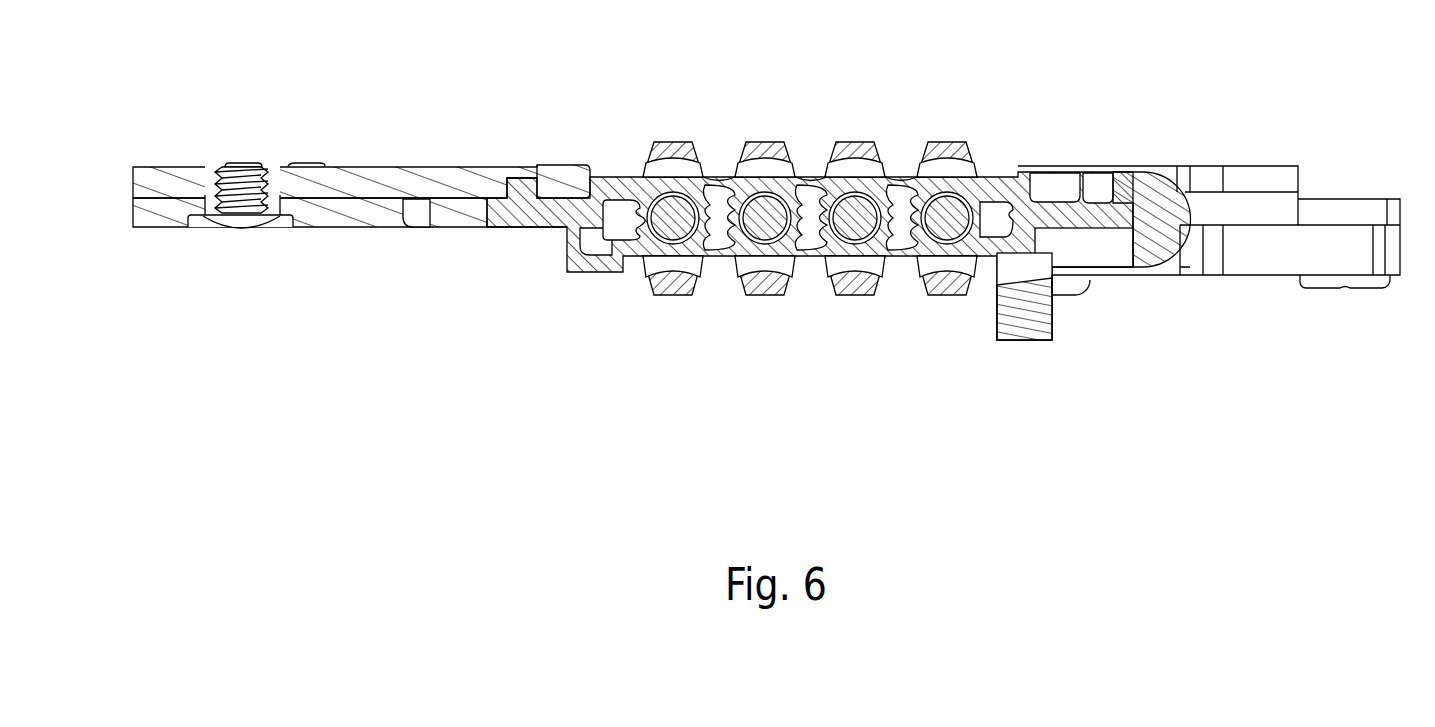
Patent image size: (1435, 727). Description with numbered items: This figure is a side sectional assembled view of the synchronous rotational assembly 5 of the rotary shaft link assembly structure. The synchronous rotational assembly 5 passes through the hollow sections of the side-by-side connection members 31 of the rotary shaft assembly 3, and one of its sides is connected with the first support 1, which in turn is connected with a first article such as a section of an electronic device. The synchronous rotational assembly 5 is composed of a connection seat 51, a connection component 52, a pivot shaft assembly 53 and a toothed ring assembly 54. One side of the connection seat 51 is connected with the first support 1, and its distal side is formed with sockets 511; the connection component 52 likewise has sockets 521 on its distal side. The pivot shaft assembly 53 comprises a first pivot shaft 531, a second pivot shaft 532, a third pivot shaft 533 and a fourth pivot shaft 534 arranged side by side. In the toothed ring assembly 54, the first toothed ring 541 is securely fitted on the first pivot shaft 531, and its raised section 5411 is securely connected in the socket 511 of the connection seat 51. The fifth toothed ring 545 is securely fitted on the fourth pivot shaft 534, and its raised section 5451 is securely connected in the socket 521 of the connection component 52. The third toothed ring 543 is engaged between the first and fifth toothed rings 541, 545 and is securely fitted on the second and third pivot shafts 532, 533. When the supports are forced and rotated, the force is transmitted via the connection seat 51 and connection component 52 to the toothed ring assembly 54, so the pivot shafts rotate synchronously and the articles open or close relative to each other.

The first support 1 is at (170, 228).
The rotary shaft assembly 3 is at (982, 148).
The connection member 31 is at (658, 160).
The synchronous rotational assembly 5 is at (1156, 105).
The connection seat 51 is at (366, 168).
The socket 511 is at (518, 168).
The connection component 52 is at (1187, 222).
The socket 521 is at (1100, 210).
The pivot shaft assembly 53 is at (810, 129).
The first pivot shaft 531 is at (676, 215).
The second pivot shaft 532 is at (768, 215).
The third pivot shaft 533 is at (858, 215).
The fourth pivot shaft 534 is at (947, 163).
The toothed ring assembly 54 is at (637, 378).
The first toothed ring 541 is at (680, 258).
The raised section 5411 is at (535, 228).
The third toothed ring 543 is at (815, 250).
The fifth toothed ring 545 is at (950, 260).
The raised section 5451 is at (1105, 258).